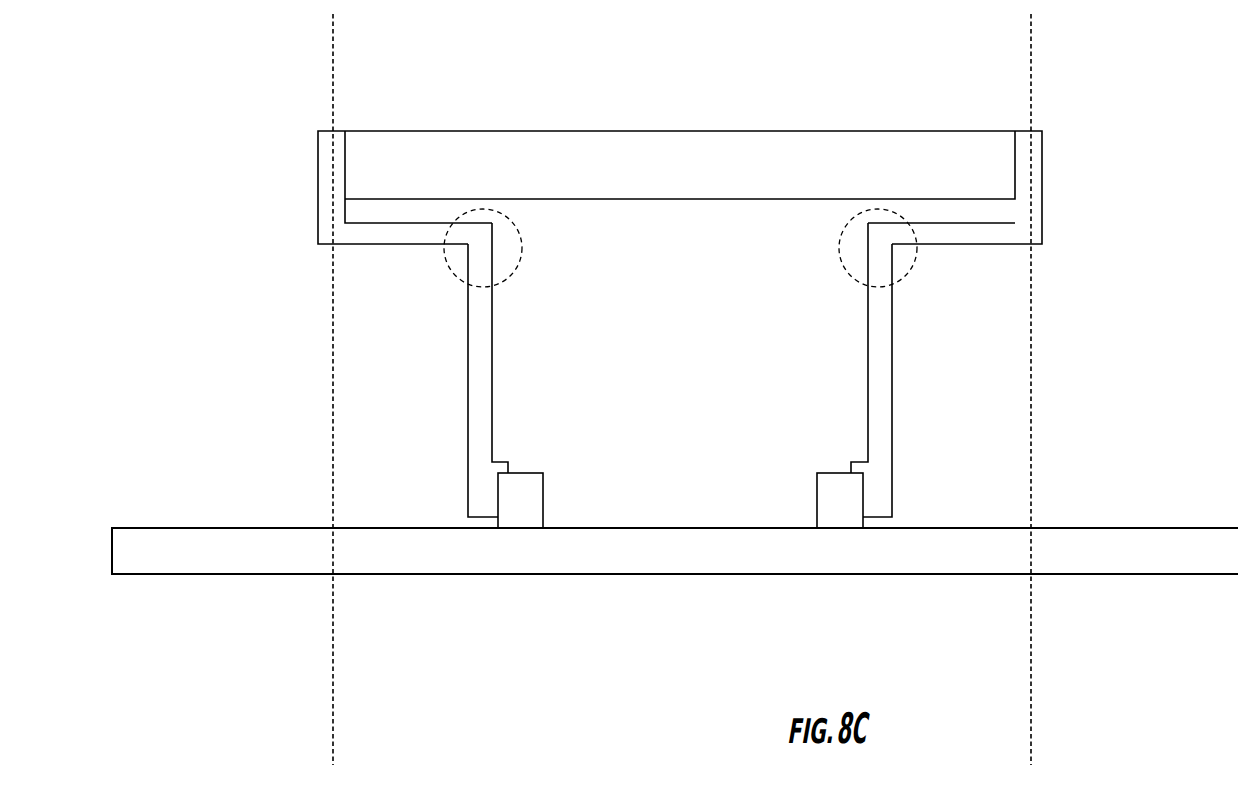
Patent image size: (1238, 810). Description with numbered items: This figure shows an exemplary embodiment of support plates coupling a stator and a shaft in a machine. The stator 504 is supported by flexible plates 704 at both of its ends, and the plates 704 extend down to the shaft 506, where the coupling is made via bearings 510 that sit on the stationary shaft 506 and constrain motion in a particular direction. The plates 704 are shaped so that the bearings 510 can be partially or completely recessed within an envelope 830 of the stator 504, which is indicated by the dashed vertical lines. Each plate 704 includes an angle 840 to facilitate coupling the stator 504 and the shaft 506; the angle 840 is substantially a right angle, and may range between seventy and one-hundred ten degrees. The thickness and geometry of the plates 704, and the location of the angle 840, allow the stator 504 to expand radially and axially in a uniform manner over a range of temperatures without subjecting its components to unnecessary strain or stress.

The stator 504 is at (700, 132).
The shaft 506 is at (690, 575).
The bearing 510 is at (543, 502).
The flexible plate 704 is at (468, 347).
The envelope 830 is at (332, 72).
The angle 840 is at (455, 270).